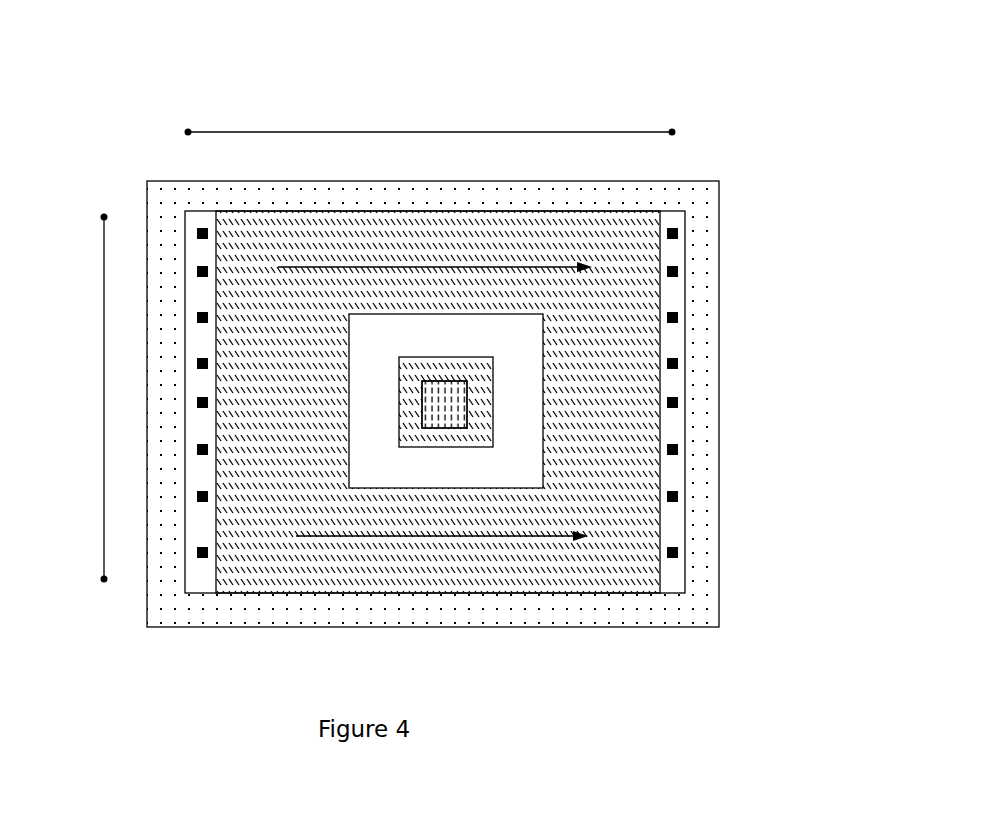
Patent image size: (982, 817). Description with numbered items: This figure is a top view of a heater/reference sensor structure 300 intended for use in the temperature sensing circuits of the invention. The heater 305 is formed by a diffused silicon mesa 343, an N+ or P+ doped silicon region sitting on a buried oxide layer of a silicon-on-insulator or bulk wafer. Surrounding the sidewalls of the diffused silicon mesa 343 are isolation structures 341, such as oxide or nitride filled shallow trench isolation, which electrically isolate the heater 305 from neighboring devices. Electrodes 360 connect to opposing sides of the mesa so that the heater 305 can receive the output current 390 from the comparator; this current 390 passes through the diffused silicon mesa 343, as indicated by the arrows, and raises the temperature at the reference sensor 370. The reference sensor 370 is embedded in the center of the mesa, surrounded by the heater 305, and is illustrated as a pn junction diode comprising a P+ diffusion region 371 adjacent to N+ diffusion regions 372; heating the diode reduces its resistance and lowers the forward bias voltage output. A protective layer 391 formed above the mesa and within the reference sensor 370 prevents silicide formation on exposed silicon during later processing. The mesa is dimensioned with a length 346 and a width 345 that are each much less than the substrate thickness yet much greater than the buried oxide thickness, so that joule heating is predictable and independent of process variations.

The heater/reference sensor structure 300 is at (80, 104).
The heater 305 is at (201, 590).
The isolation structures 341 is at (719, 403).
The diffused silicon mesa 343 is at (202, 578).
The width 345 is at (492, 132).
The length 346 is at (104, 303).
The electrodes 360 is at (672, 313).
The reference sensor 370 is at (634, 477).
The P+ diffusion region 371 is at (440, 408).
The N+ diffusion regions 372 is at (492, 459).
The output current 390 is at (372, 267).
The protective layer 391 is at (482, 367).